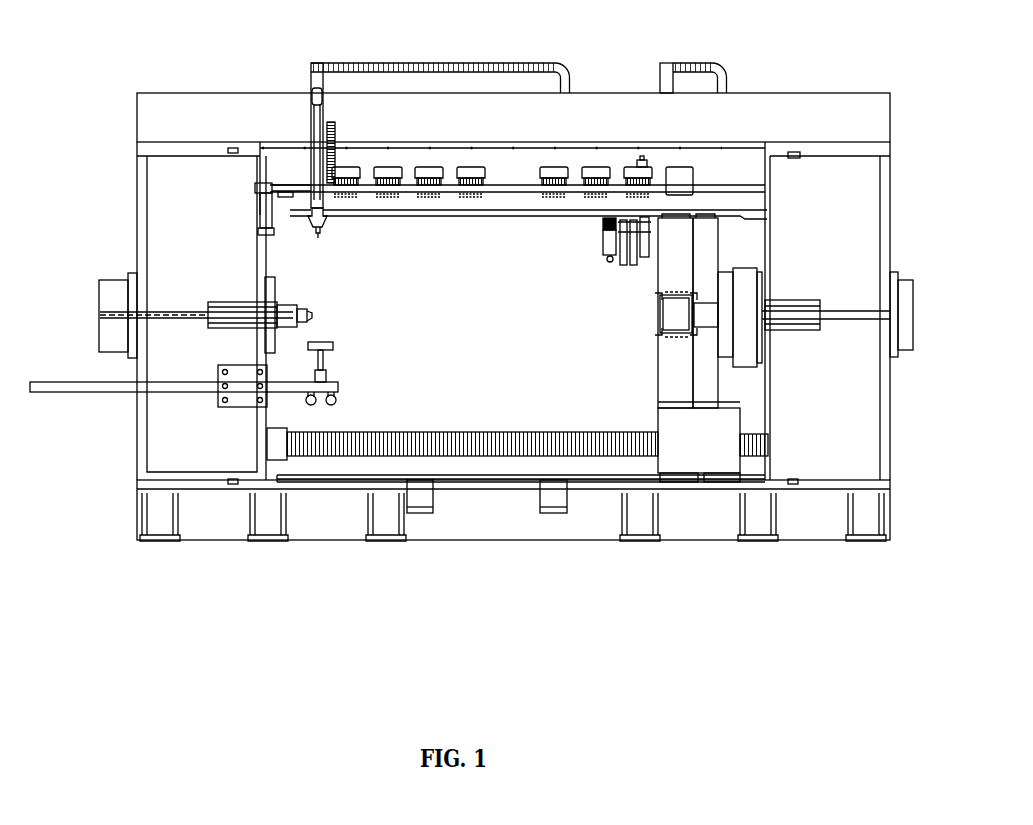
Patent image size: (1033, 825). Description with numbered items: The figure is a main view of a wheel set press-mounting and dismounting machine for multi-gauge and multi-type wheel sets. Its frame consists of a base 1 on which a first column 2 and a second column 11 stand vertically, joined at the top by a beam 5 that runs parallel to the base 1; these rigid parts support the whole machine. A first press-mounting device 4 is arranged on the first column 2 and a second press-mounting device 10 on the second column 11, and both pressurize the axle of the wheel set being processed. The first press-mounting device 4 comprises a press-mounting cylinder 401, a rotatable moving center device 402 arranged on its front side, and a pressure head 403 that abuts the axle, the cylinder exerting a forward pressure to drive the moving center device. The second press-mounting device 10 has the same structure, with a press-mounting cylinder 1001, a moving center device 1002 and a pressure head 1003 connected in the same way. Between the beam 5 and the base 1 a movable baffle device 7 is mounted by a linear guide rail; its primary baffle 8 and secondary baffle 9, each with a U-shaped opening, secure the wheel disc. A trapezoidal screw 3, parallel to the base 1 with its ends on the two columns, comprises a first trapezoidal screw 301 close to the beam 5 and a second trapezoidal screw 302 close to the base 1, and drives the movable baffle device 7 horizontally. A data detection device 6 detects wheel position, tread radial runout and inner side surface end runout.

The base 1 is at (215, 499).
The first column 2 is at (190, 440).
The trapezoidal screw 3 is at (223, 413).
The first trapezoidal screw 301 is at (548, 172).
The second trapezoidal screw 302 is at (442, 433).
The first press-mounting device 4 is at (266, 300).
The press-mounting cylinder 401 is at (113, 292).
The moving center device 402 is at (285, 307).
The pressure head 403 is at (297, 307).
The beam 5 is at (190, 130).
The data detection device 6 is at (300, 187).
The movable baffle device 7 is at (687, 430).
The primary baffle 8 is at (223, 410).
The secondary baffle 9 is at (723, 240).
The second press-mounting device 10 is at (680, 428).
The press-mounting cylinder 1001 is at (900, 287).
The moving center device 1002 is at (698, 327).
The pressure head 1003 is at (697, 330).
The second column 11 is at (807, 225).